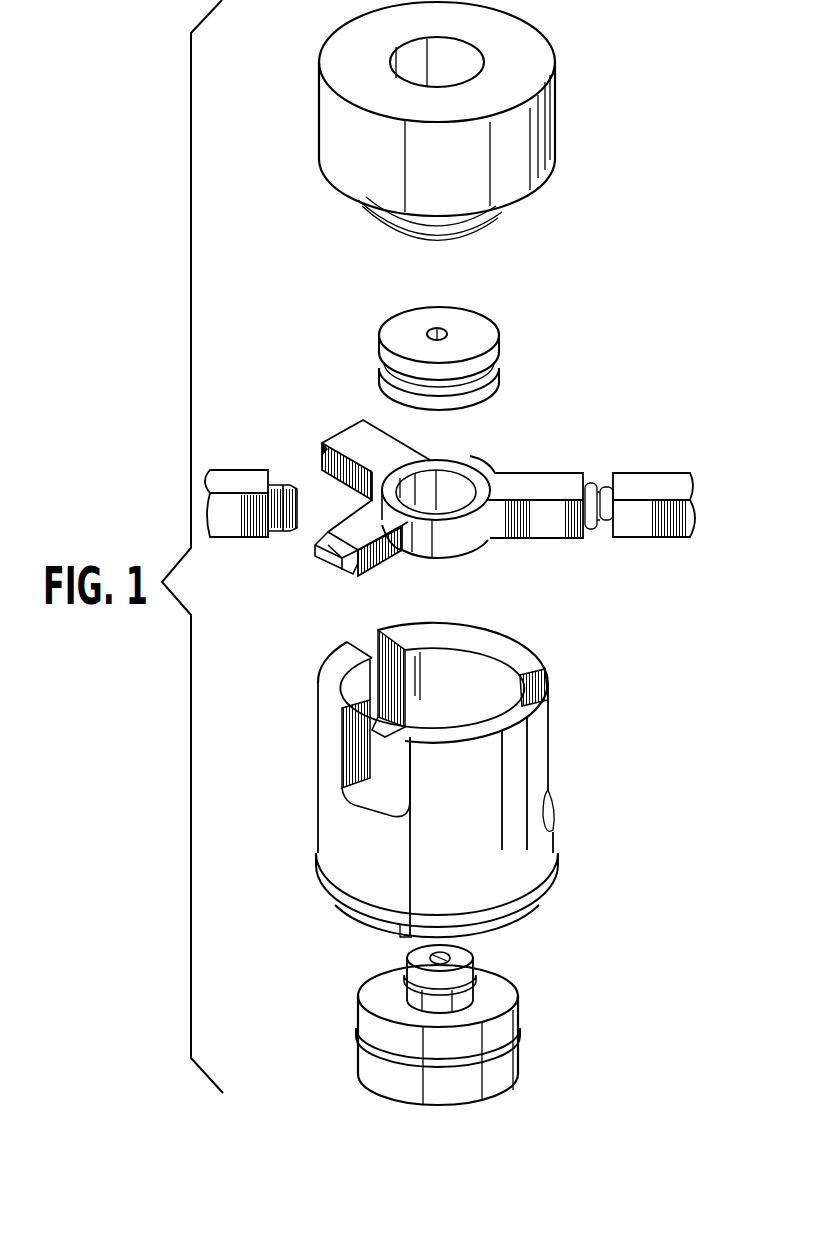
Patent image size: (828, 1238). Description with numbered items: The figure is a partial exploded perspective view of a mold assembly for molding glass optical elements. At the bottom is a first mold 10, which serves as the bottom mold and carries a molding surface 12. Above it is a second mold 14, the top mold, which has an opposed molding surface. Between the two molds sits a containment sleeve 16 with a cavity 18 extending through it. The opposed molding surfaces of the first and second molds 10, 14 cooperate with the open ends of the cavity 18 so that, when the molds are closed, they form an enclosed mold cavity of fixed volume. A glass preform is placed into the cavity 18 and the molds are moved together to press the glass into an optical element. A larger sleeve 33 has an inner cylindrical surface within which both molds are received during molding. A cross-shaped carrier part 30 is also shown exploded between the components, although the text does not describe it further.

The first mold 10 is at (476, 960).
The molding surface 12 is at (443, 958).
The second mold 14 is at (532, 154).
The containment sleeve 16 is at (478, 338).
The cavity 18 is at (437, 330).
The cross-shaped spider 30 is at (378, 447).
The sleeve 33 is at (553, 819).